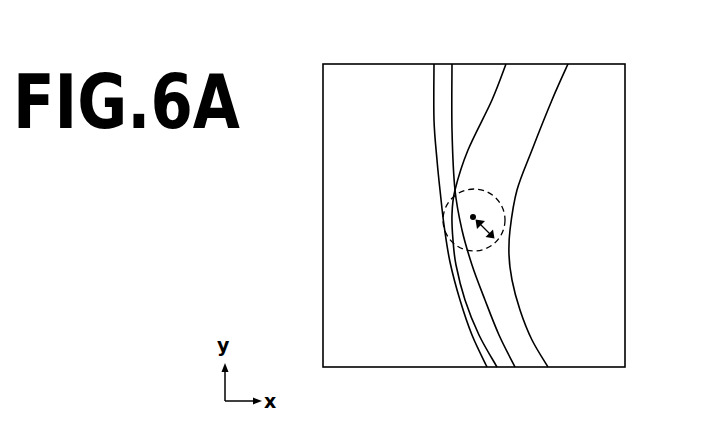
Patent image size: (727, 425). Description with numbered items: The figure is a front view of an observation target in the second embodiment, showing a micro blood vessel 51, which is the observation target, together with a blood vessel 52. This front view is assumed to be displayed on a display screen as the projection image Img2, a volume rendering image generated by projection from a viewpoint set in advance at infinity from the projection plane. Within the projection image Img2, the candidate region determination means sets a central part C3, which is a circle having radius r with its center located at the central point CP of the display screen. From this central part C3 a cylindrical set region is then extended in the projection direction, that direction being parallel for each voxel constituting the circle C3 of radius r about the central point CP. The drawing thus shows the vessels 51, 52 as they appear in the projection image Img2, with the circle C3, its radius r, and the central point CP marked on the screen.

The micro blood vessel 51 is at (443, 68).
The blood vessel 52 is at (522, 70).
The projection image Img2 is at (588, 62).
The central point CP is at (476, 216).
The radius r is at (497, 229).
The central part C3 is at (497, 253).